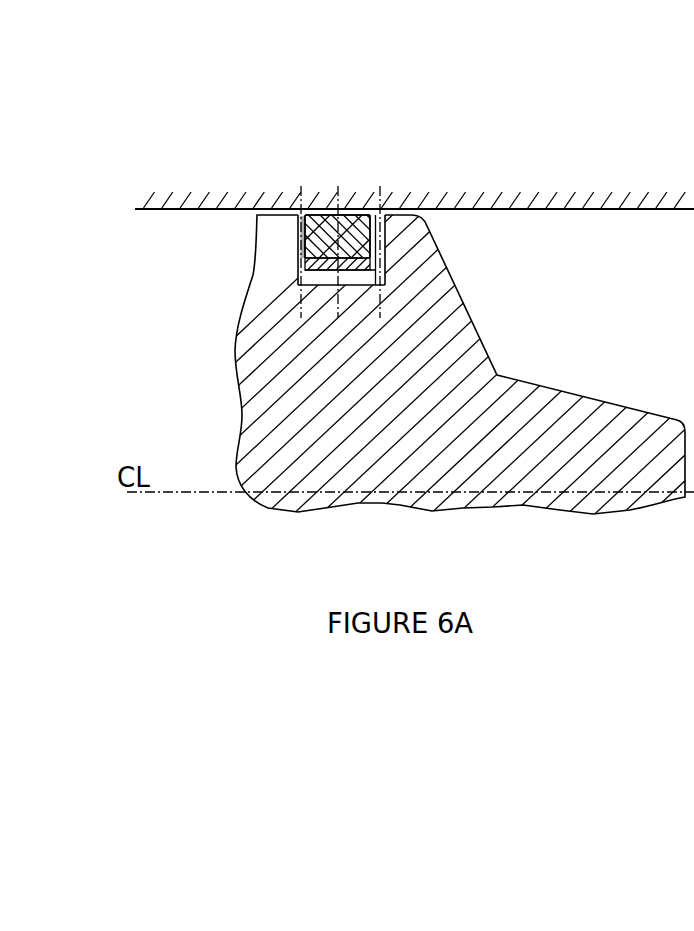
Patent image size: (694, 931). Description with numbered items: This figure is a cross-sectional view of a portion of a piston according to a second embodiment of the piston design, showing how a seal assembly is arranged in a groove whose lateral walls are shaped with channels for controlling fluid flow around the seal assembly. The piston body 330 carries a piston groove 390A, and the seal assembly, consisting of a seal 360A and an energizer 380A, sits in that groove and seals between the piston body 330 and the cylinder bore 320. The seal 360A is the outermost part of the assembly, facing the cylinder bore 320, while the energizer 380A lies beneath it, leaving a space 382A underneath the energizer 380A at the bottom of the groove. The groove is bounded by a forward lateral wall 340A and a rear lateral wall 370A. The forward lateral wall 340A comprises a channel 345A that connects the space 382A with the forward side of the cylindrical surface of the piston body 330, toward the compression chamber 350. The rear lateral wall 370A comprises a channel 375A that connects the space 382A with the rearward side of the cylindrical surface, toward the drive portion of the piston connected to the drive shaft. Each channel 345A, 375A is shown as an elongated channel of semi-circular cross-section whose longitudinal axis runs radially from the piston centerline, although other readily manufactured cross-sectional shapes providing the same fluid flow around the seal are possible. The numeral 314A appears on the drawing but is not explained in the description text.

The cylinder bore 320 is at (217, 207).
The piston body 330 is at (303, 403).
The top surface of insert 314A is at (342, 215).
The seal 360A is at (326, 230).
The channel 375A is at (296, 254).
The rear lateral wall 370A is at (298, 264).
The space 382A is at (296, 266).
The piston groove 390A is at (337, 285).
The channel 345A is at (388, 233).
The forward lateral wall 340A is at (375, 249).
The energizer 380A is at (362, 268).
The compression chamber 350 is at (688, 341).